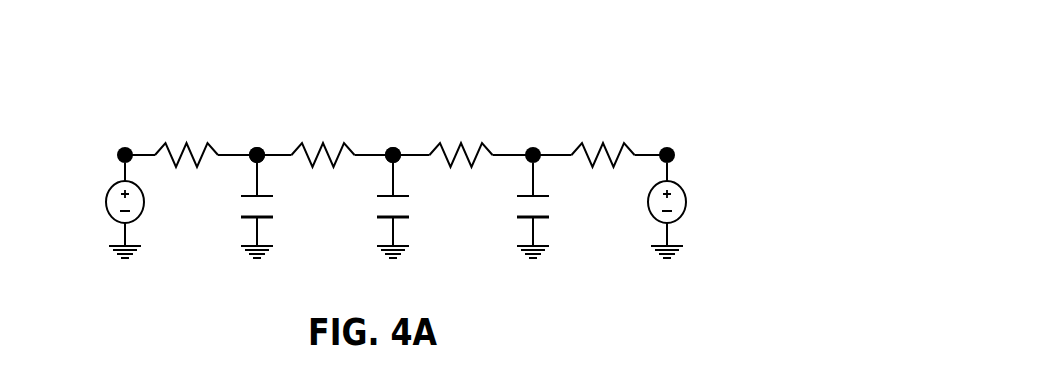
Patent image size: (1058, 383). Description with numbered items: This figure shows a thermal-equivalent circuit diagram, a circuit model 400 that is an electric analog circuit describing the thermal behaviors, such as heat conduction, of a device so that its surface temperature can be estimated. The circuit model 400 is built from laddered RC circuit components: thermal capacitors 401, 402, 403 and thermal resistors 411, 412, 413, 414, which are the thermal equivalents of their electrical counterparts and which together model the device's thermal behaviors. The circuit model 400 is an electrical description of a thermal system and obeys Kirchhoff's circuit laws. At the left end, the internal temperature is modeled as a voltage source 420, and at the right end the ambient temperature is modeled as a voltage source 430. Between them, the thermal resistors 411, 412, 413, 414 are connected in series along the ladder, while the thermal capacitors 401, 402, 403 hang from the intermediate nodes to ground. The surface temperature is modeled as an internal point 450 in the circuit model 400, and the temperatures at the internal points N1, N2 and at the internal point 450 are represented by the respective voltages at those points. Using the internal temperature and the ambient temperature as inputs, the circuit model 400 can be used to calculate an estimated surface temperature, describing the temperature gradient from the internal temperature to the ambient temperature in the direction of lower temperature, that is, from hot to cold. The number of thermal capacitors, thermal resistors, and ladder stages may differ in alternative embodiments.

The circuit model 400 is at (710, 78).
The thermal capacitor 401 is at (276, 210).
The thermal capacitor 402 is at (414, 210).
The thermal capacitor 403 is at (553, 210).
The thermal resistor 411 is at (186, 139).
The thermal resistor 412 is at (323, 139).
The thermal resistor 413 is at (461, 139).
The thermal resistor 414 is at (603, 139).
The voltage source 420 is at (102, 210).
The voltage source 430 is at (688, 210).
The internal point 450 is at (533, 145).
The internal point N1 is at (257, 145).
The internal point N2 is at (393, 145).